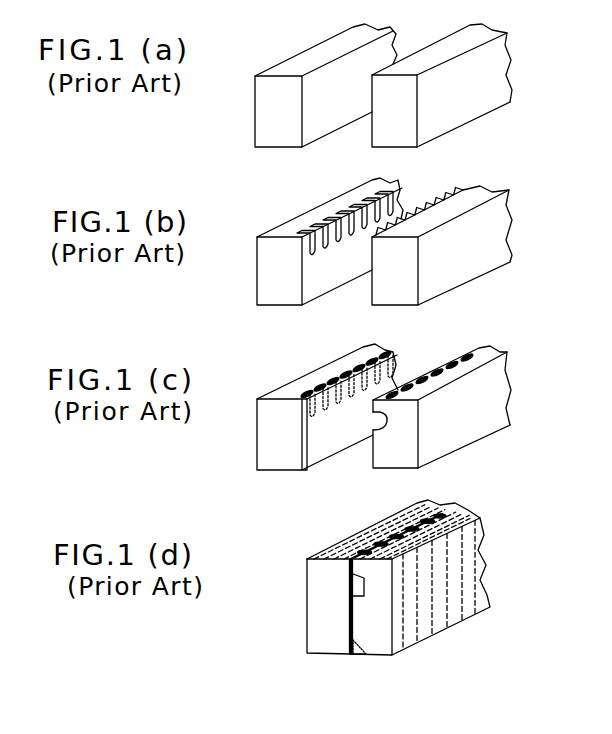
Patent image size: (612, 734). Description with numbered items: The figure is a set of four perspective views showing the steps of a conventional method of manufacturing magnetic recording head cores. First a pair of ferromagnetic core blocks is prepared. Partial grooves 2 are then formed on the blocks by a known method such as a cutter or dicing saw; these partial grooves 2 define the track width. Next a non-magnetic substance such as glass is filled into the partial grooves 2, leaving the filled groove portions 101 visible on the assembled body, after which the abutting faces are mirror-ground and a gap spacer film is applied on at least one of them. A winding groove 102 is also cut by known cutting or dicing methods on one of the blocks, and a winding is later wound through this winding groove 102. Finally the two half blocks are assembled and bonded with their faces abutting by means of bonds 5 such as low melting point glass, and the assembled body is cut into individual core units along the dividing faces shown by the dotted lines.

The partial groove 2 is at (310, 231).
The bond 5 is at (350, 643).
The filled groove portions 101 is at (391, 540).
The winding groove 102 is at (383, 426).